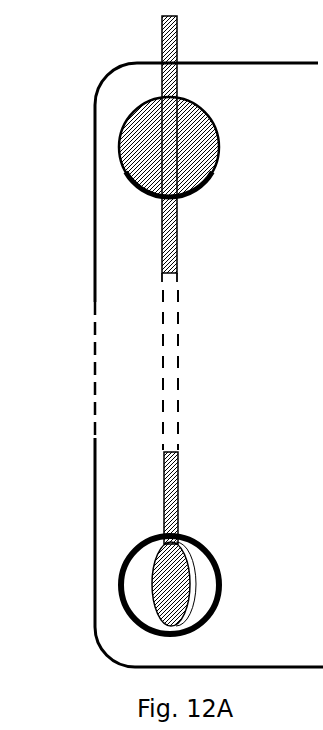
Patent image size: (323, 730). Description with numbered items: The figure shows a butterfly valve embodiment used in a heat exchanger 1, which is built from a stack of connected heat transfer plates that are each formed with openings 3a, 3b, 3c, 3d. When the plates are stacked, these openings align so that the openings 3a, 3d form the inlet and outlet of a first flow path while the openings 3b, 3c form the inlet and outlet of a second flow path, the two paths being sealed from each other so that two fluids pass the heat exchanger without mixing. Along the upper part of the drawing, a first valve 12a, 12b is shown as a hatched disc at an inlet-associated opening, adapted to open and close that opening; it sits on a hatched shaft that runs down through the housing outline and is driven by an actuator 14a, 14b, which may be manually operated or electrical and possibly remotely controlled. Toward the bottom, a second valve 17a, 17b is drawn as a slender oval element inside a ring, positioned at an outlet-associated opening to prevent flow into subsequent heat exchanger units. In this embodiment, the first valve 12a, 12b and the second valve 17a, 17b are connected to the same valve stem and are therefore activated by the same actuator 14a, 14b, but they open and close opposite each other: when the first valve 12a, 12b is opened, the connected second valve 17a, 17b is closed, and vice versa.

The heat exchanger 1 is at (92, 258).
The first valve 12a is at (189, 171).
The first valve 12b is at (161, 171).
The opening 3a is at (158, 209).
The opening 3b is at (145, 195).
The actuator 14a is at (217, 233).
The actuator 14b is at (185, 248).
The opening 3c is at (161, 562).
The opening 3d is at (140, 573).
The second valve 17a is at (212, 539).
The second valve 17b is at (190, 553).